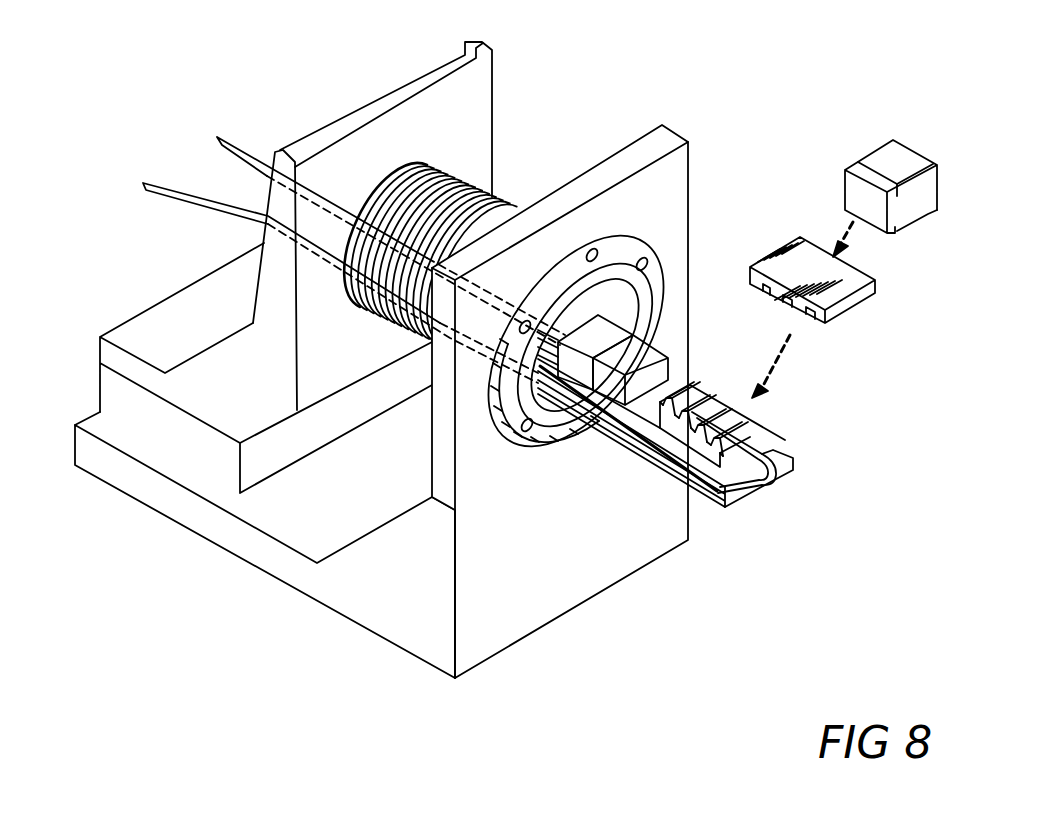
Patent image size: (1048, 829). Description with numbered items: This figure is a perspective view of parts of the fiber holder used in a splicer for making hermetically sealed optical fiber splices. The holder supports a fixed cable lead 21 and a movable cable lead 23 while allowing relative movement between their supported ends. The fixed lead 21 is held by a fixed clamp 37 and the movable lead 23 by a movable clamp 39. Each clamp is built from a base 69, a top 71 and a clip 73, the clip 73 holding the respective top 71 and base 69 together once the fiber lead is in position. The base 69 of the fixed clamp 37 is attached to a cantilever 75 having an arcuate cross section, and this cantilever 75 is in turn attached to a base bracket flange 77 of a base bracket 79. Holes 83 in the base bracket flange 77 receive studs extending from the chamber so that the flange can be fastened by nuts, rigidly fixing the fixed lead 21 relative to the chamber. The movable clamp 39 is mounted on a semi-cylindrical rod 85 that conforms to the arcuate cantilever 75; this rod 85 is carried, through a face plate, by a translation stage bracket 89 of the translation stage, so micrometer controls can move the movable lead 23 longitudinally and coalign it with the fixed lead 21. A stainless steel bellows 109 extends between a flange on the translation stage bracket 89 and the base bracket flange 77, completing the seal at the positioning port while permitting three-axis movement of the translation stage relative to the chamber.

The fixed cable lead 21 is at (161, 192).
The movable cable lead 23 is at (262, 115).
The fixed clamp 37 is at (894, 264).
The movable clamp 39 is at (650, 358).
The base 69 is at (780, 437).
The top 71 is at (873, 285).
The clip 73 is at (938, 195).
The cantilever 75 is at (747, 507).
The base bracket flange 77 is at (543, 433).
The base bracket 79 is at (545, 567).
The holes 83 is at (512, 448).
The semi-cylindrical rod 85 is at (613, 403).
The translation stage bracket 89 is at (459, 126).
The stainless steel bellows 109 is at (498, 197).